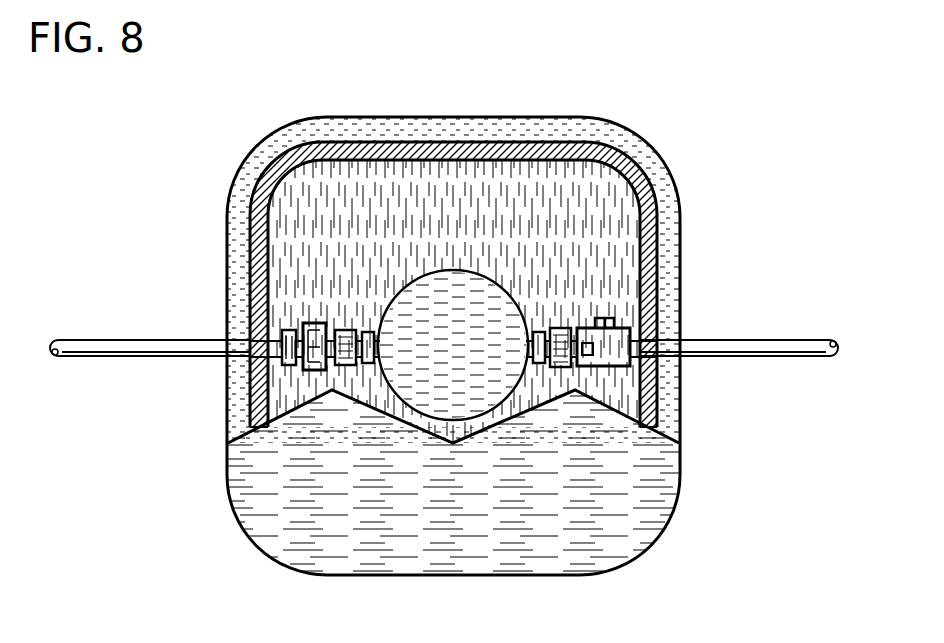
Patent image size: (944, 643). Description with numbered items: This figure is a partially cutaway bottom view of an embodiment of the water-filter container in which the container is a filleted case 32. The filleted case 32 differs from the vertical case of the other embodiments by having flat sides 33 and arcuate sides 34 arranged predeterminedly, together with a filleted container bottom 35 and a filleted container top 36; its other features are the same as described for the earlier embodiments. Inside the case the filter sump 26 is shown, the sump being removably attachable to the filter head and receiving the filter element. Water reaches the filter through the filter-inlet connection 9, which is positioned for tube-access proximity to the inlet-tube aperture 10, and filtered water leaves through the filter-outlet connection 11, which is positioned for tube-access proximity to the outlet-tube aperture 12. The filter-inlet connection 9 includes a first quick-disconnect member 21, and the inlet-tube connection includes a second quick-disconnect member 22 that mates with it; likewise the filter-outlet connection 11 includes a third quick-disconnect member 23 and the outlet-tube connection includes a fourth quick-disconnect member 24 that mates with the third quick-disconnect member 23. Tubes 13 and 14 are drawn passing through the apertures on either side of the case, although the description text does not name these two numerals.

The filter-inlet connection 9 is at (550, 330).
The inlet-tube aperture 10 is at (657, 360).
The filter-outlet connection 11 is at (362, 328).
The outlet-tube aperture 12 is at (270, 338).
The outlet tube 13 is at (710, 343).
The inlet tube 14 is at (190, 343).
The first quick-disconnect member 21 is at (573, 330).
The second quick-disconnect member 22 is at (617, 333).
The third quick-disconnect member 23 is at (345, 327).
The fourth quick-disconnect member 24 is at (303, 325).
The filter sump 26 is at (455, 345).
The filleted case 32 is at (180, 138).
The flat sides 33 is at (400, 150).
The arcuate sides 34 is at (620, 160).
The filleted container bottom 35 is at (370, 465).
The filleted container top 36 is at (479, 225).